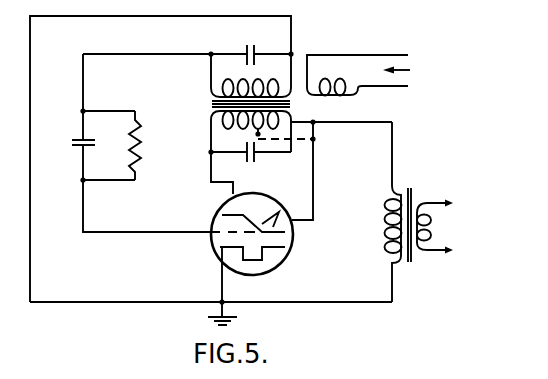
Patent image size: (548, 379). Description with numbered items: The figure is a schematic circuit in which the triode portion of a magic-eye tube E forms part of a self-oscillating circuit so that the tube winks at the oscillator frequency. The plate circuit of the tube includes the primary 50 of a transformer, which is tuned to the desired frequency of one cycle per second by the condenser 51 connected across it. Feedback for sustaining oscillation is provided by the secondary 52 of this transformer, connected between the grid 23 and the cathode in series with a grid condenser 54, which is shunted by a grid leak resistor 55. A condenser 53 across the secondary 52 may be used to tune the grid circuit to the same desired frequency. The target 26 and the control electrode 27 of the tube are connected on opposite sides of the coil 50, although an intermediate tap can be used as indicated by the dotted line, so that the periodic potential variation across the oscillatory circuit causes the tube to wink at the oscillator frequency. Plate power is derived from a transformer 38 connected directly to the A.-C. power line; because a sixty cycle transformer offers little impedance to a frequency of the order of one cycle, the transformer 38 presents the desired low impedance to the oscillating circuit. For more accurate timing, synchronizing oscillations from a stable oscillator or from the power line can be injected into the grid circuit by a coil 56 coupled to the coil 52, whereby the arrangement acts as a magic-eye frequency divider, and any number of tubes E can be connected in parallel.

The grid 23 is at (218, 228).
The target 26 is at (270, 212).
The control electrode 27 is at (283, 234).
The tube E is at (293, 265).
The transformer 38 is at (418, 184).
The primary 50 is at (212, 108).
The condenser 51 is at (248, 160).
The secondary 52 is at (210, 82).
The condenser 53 is at (247, 46).
The grid condenser 54 is at (95, 143).
The grid leak resistor 55 is at (141, 144).
The coil 56 is at (360, 95).